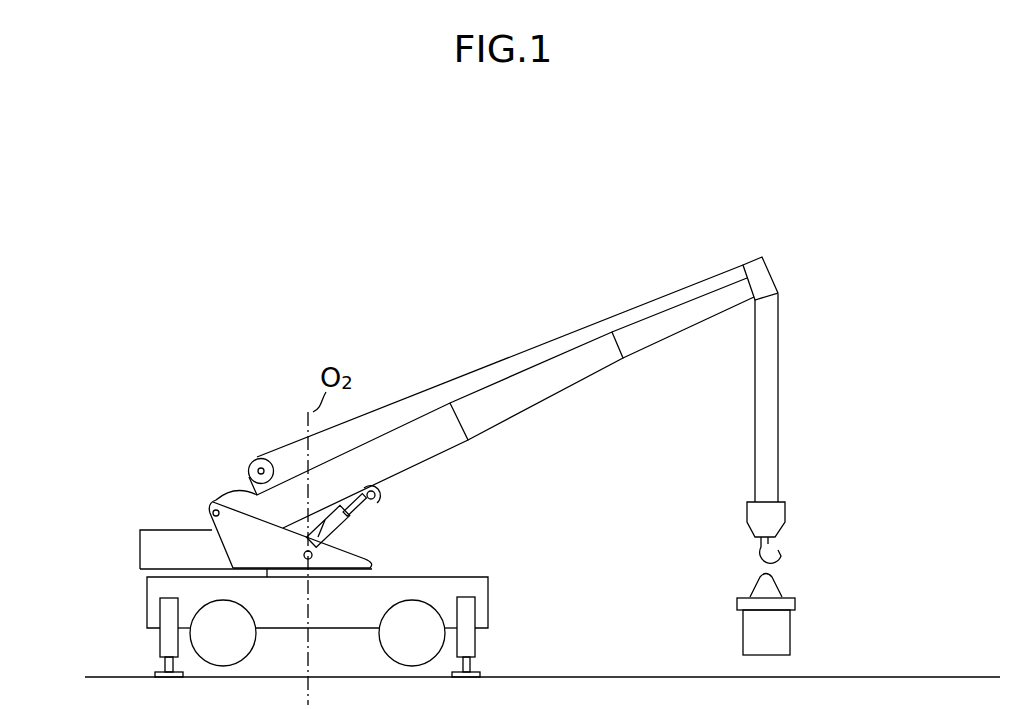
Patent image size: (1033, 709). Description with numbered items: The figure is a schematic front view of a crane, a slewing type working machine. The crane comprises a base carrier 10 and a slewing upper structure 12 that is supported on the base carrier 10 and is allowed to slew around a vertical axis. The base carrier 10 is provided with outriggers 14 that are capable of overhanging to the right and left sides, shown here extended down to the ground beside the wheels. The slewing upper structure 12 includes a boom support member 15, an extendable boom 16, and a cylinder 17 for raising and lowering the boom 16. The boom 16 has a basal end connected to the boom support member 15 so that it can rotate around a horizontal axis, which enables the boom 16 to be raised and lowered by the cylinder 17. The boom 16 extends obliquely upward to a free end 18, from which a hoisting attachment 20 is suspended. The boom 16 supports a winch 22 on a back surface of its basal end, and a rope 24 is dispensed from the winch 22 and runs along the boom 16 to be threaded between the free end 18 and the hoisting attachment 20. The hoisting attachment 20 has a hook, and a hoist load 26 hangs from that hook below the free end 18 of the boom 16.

The base carrier 10 is at (471, 577).
The slewing upper structure 12 is at (133, 543).
The outriggers 14 is at (160, 650).
The boom support member 15 is at (237, 492).
The extendable boom 16 is at (534, 362).
The cylinder 17 is at (340, 527).
The free end 18 is at (763, 256).
The hoisting attachment 20 is at (785, 517).
The winch 22 is at (253, 461).
The rope 24 is at (636, 306).
The hoist load 26 is at (737, 604).